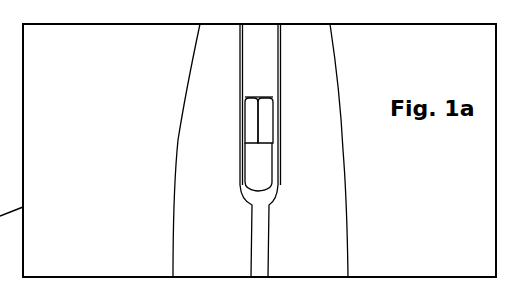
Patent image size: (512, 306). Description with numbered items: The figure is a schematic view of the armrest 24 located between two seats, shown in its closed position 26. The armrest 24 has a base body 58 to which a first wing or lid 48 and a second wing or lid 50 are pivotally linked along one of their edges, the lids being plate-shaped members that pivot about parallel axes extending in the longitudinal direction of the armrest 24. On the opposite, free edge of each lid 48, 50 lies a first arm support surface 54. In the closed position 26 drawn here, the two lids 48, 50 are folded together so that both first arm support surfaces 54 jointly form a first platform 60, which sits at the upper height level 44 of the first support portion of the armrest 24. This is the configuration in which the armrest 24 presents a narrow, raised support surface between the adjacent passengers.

The armrest 24 is at (263, 160).
The closed position 26 is at (290, 94).
The upper height level 44 is at (232, 102).
The first wing or lid 48 is at (253, 120).
The second wing or lid 50 is at (266, 124).
The first arm support surface 54 is at (240, 88).
The base body 58 is at (255, 180).
The first platform 60 is at (251, 89).